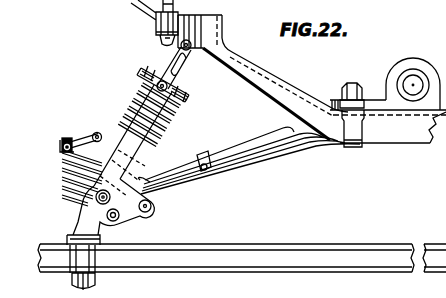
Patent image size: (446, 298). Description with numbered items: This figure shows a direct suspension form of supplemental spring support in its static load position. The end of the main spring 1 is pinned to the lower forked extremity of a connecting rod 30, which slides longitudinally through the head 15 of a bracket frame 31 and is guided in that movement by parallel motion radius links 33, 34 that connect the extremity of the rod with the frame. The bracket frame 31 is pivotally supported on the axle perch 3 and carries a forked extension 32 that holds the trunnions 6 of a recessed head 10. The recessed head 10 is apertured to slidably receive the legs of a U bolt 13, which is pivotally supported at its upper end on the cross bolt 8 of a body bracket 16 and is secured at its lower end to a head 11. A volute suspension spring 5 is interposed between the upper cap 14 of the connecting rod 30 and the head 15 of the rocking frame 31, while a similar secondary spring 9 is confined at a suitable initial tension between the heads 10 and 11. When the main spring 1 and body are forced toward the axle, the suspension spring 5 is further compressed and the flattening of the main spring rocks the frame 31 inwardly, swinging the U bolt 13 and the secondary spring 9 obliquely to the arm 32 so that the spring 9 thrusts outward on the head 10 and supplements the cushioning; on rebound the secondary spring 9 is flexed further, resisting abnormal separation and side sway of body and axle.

The main spring 1 is at (249, 153).
The axle perch 3 is at (72, 223).
The volute suspension spring 5 is at (62, 182).
The trunnion 6 is at (156, 72).
The cross bolt 8 is at (226, 46).
The secondary coil spring 9 is at (166, 116).
The recessed head 10 is at (238, 97).
The head 11 is at (194, 147).
The U bolt 13 is at (211, 79).
The upper cap 14 is at (64, 132).
The head 15 is at (72, 207).
The body bracket 16 is at (174, 30).
The connecting rod 30 is at (115, 221).
The bracket frame 31 is at (205, 202).
The forked extension 32 is at (136, 105).
The radius link 33 is at (121, 216).
The radius link 34 is at (84, 133).